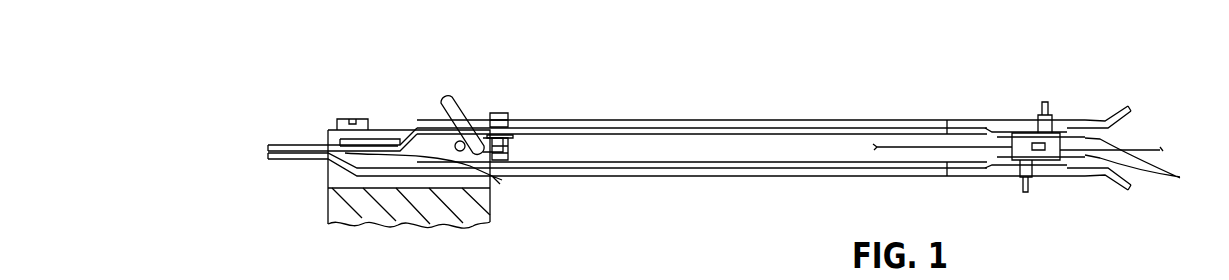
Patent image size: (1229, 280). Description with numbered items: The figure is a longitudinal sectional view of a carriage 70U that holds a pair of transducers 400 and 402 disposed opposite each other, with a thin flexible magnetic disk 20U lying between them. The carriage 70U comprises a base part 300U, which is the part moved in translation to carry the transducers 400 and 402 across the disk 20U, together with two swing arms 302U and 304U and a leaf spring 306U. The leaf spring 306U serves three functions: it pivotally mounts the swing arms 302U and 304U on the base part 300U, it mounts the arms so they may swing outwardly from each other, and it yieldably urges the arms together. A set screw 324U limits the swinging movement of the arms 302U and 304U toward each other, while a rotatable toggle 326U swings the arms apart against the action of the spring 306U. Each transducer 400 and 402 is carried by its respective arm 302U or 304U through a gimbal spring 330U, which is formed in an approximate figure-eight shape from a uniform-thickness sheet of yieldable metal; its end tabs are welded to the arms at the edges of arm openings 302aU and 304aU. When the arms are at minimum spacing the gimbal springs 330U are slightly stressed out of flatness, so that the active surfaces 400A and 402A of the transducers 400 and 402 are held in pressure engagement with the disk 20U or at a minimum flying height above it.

The magnetic disk 20U is at (1150, 143).
The carriage 70U is at (263, 155).
The base part 300U is at (323, 205).
The swing arm 302U is at (745, 120).
The swing arm 304U is at (750, 176).
The leaf spring 306U is at (500, 181).
The set screw 324U is at (498, 113).
The rotatable toggle 326U is at (436, 122).
The transducer 400 is at (1030, 140).
The active surface 400A is at (1040, 152).
The transducer 402 is at (1055, 160).
The active surface 402A is at (1043, 133).
The arm opening 302aU is at (1081, 123).
The arm opening 304aU is at (1000, 177).
The gimbal spring 330U is at (1148, 164).